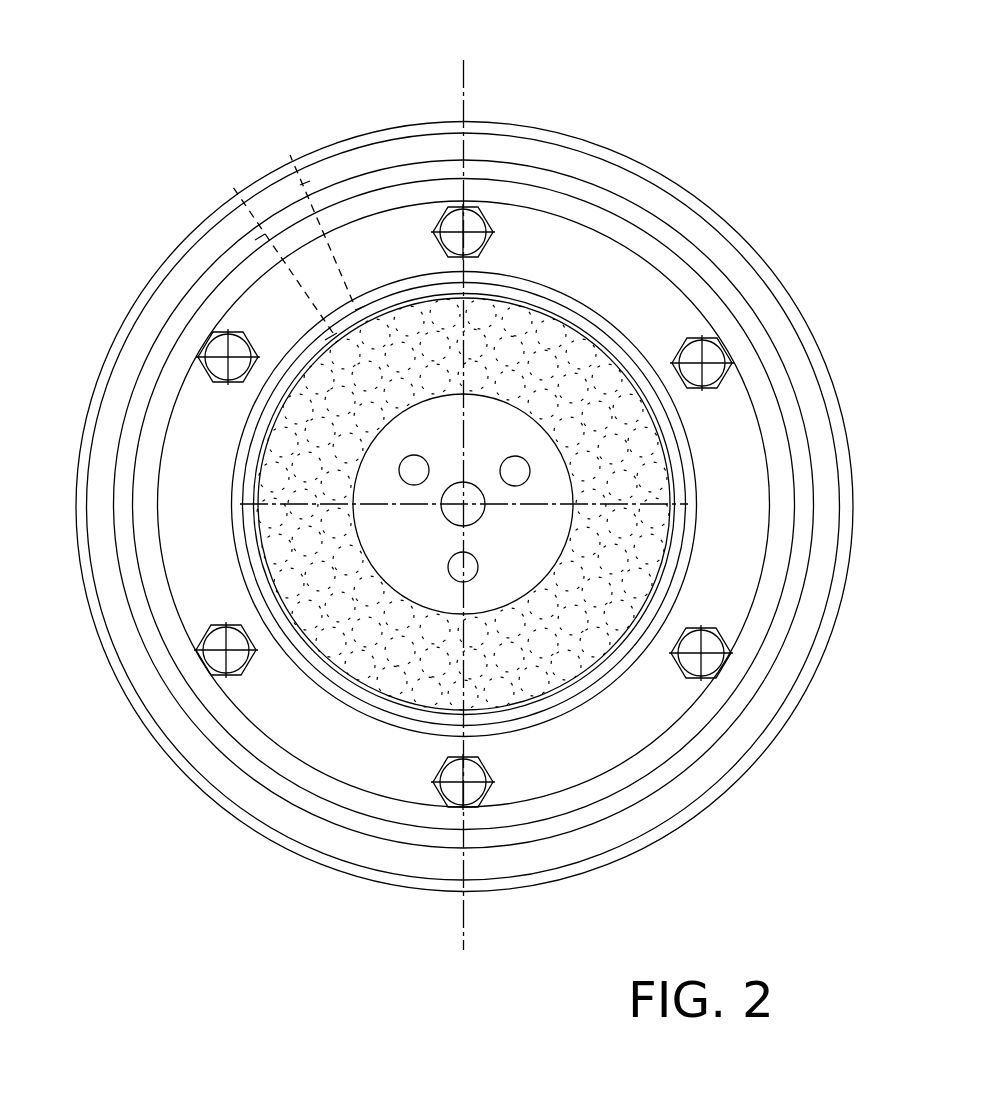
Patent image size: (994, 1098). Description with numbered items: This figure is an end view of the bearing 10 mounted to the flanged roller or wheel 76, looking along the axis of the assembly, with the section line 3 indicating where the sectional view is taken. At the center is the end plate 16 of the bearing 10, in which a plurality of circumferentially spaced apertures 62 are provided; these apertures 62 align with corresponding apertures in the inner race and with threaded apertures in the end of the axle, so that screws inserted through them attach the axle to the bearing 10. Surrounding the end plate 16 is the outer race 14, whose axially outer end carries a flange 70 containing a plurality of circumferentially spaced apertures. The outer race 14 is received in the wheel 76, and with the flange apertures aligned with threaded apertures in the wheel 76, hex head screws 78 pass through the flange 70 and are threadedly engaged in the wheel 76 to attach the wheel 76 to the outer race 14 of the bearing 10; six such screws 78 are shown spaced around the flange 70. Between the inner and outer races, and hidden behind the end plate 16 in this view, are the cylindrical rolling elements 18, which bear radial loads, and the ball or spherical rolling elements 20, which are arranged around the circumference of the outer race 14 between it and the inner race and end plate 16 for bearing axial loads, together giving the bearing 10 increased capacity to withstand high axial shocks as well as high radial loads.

The section line 3- 3 is at (450, 508).
The bearing 10 is at (637, 255).
The outer race 14 is at (177, 520).
The end plate 16 is at (534, 559).
The cylindrical rolling elements 18 is at (464, 424).
The ball or spherical rolling elements 20 is at (225, 179).
The apertures 62 is at (525, 478).
The flange 70 is at (342, 737).
The flanged roller or wheel 76 is at (651, 826).
The hex head screws 78 is at (212, 666).